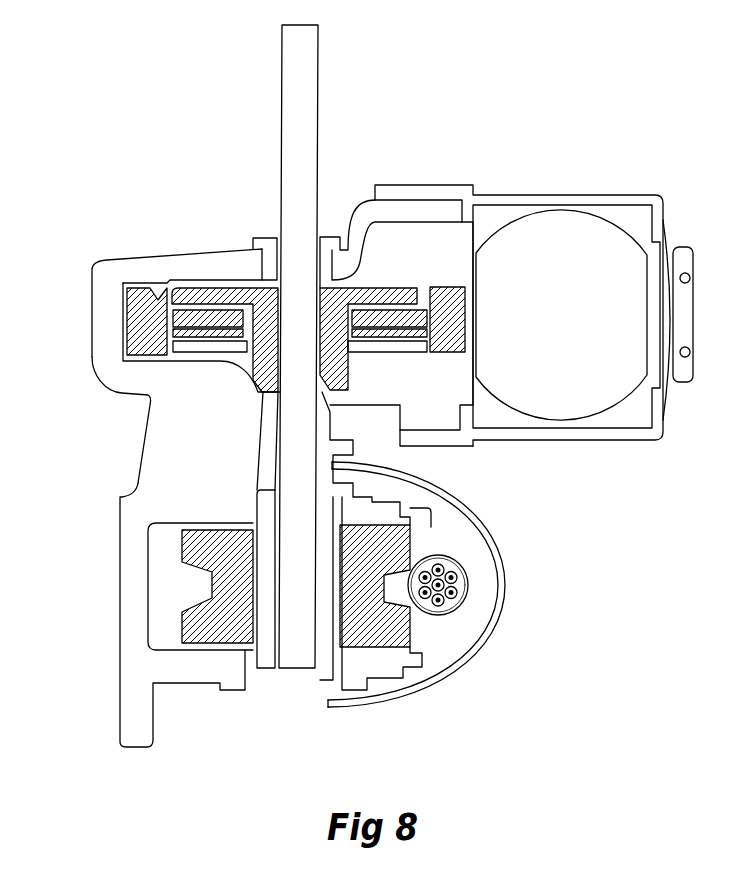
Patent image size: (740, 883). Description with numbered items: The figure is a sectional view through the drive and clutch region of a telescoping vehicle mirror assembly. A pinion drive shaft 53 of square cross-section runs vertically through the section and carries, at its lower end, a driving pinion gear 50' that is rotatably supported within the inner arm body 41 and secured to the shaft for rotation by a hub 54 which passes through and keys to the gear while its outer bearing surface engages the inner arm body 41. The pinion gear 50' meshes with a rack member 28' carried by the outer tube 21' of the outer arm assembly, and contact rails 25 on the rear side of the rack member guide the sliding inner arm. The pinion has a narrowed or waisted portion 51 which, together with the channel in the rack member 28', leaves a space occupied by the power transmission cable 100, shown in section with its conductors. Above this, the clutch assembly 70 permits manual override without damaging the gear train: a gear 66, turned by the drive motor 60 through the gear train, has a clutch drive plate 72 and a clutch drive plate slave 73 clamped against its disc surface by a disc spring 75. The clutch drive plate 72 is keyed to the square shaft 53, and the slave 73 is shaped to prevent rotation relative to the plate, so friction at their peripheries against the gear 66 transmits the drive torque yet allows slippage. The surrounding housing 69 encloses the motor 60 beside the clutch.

The pinion drive shaft 53 is at (305, 107).
The clutch drive plate 72 is at (380, 286).
The cover housing 69 is at (613, 202).
The gear 66 is at (135, 318).
The clutch assembly 70 is at (228, 283).
The disc spring 75 is at (403, 352).
The clutch drive plate slave 73 is at (421, 348).
The drive motor 60 is at (577, 377).
The contact rails 25 is at (403, 517).
The waisted portion 51 is at (205, 578).
The inner arm body 41 is at (133, 593).
The power transmission cable 100 is at (467, 585).
The driving pinion gear 50' is at (146, 586).
The rack member 28' is at (443, 613).
The hub 54 is at (330, 670).
The outer tube 21' is at (416, 610).